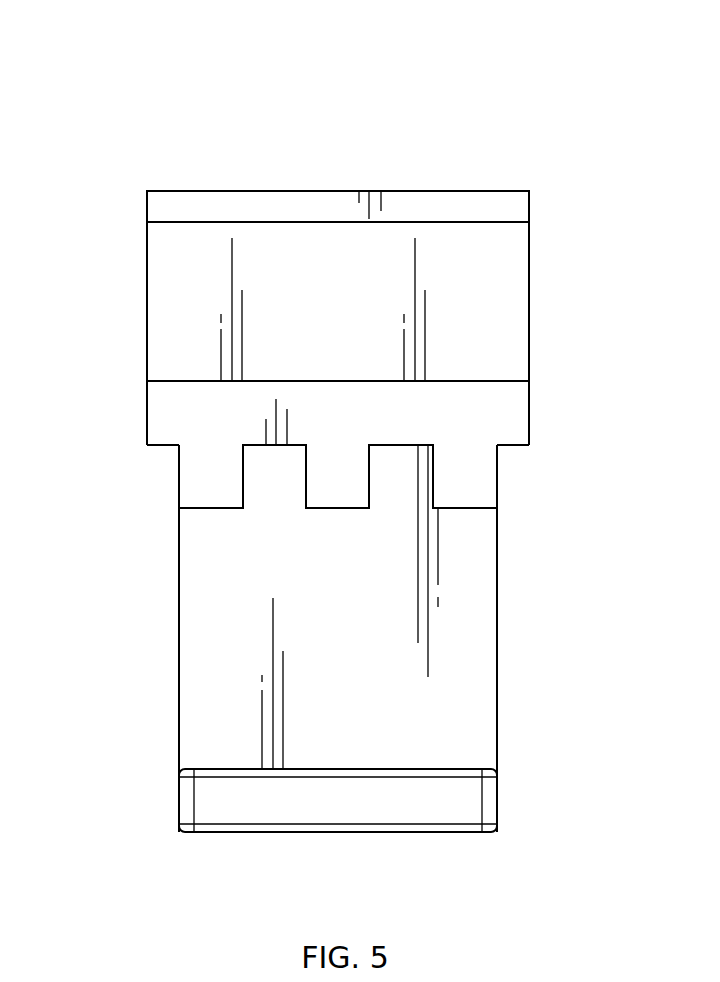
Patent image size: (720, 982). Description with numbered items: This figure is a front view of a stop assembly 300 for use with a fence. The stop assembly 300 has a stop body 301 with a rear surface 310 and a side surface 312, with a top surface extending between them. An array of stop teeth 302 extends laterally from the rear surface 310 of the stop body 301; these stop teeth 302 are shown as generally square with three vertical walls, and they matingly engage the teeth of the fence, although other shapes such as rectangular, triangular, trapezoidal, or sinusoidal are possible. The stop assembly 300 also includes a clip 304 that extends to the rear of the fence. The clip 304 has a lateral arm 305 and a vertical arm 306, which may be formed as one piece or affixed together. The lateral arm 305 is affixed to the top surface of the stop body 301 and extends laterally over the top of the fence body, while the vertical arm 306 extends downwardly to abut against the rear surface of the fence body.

The stop assembly 300 is at (175, 105).
The stop body 301 is at (125, 262).
The side surface 312 is at (147, 340).
The rear surface 310 is at (517, 447).
The clip 304 is at (612, 642).
The stop teeth 302 is at (200, 496).
The lateral arm 305 is at (477, 717).
The vertical arm 306 is at (432, 810).